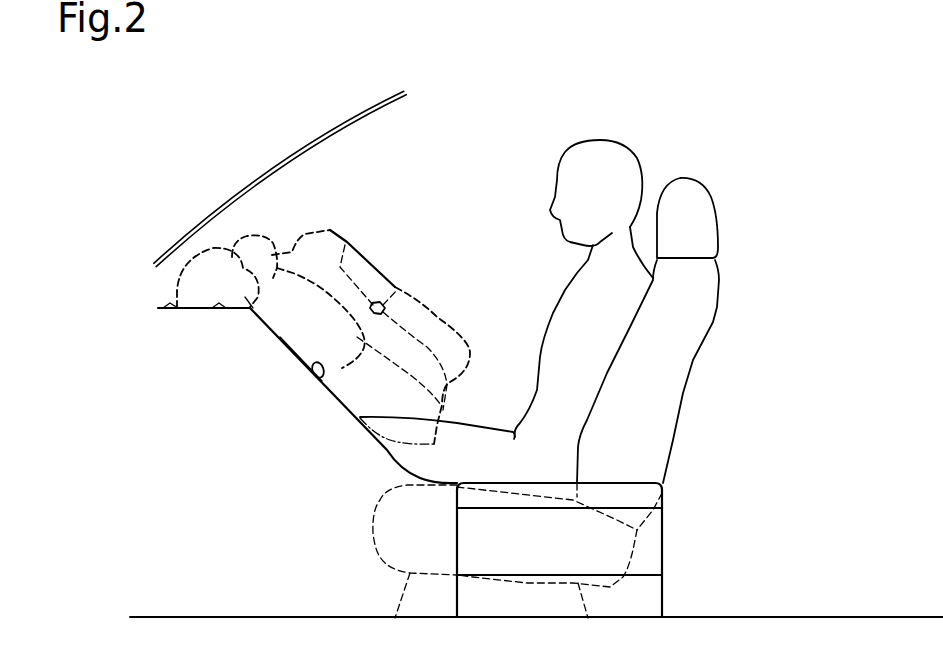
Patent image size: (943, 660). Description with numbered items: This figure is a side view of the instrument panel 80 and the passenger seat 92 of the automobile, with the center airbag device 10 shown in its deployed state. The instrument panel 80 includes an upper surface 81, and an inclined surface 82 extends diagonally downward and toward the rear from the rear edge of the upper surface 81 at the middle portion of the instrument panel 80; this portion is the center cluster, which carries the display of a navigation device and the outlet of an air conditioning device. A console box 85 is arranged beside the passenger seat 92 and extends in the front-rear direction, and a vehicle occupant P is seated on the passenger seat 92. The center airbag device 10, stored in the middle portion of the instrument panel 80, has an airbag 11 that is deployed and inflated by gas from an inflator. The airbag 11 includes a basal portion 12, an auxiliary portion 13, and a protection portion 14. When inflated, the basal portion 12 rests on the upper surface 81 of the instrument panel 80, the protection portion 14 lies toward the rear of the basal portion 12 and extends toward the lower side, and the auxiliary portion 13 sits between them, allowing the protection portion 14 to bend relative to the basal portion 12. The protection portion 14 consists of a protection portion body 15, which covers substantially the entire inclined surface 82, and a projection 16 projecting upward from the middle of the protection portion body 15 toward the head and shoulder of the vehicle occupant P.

The center airbag device 10 is at (315, 266).
The airbag 11 is at (290, 230).
The basal portion 12 is at (198, 242).
The auxiliary portion 13 is at (262, 270).
The protection portion 14 is at (438, 192).
The protection portion body 15 is at (358, 256).
The projection 16 is at (413, 283).
The instrument panel 80 is at (307, 390).
The upper surface 81 is at (177, 310).
The inclined surface 82 is at (313, 366).
The console box 85 is at (637, 480).
The passenger seat 92 is at (693, 362).
The vehicle occupant P is at (631, 139).